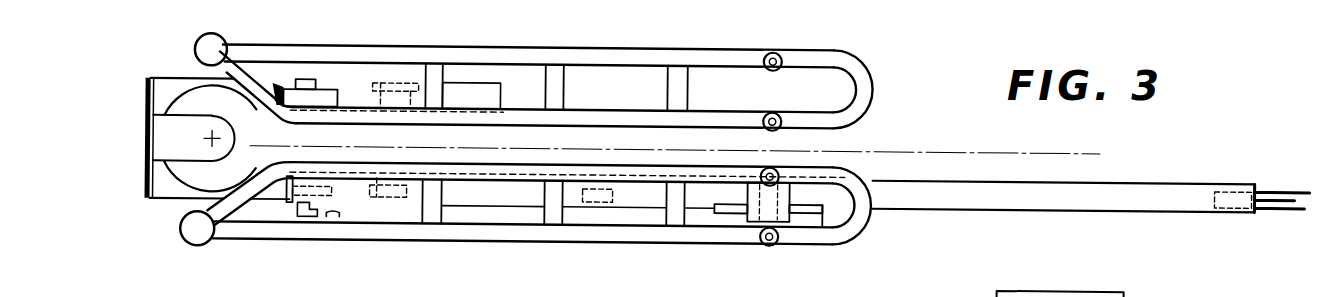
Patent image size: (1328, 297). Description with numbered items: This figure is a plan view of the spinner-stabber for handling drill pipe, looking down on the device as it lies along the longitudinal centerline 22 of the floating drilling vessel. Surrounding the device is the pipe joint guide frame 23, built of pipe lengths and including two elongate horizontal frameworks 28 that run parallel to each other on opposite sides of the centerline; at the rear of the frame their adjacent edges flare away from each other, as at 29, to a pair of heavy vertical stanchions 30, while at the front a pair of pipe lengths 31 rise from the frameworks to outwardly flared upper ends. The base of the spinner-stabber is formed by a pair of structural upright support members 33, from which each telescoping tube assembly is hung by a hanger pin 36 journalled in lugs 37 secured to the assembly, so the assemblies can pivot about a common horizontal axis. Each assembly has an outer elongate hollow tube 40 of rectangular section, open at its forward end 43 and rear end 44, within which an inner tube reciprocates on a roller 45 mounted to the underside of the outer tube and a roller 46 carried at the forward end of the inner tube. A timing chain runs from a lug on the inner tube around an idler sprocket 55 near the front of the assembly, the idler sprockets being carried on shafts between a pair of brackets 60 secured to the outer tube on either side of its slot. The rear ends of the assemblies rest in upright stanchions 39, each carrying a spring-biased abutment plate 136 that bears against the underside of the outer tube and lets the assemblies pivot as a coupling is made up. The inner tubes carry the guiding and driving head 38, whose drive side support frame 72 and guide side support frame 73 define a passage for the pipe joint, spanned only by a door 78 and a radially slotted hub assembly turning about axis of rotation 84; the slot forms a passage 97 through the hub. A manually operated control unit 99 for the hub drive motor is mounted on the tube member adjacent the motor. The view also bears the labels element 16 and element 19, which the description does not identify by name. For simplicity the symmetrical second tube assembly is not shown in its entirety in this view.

The carriage frame 16 is at (647, 145).
The arm junction 19 is at (272, 135).
The longitudinal centerline 22 is at (972, 148).
The pipe joint guide frame 23 is at (665, 48).
The elongate horizontal frameworks 28 is at (577, 53).
The flared edges 29 is at (241, 57).
The heavy vertical stanchions 30 is at (207, 42).
The pipe lengths 31 is at (771, 110).
The structural upright support members 33 is at (795, 214).
The hanger pin 36 is at (750, 218).
The lugs 37 is at (848, 170).
The guiding and driving head 38 is at (160, 87).
The upright stanchions 39 is at (333, 217).
The outer elongate hollow tube 40 is at (1150, 176).
The forward end 43 is at (1256, 214).
The rear end 44 is at (293, 203).
The roller 45 is at (427, 72).
The roller 46 is at (1207, 202).
The idler sprocket 55 is at (1297, 196).
The brackets 60 is at (1280, 184).
The drive side support frame 72 is at (178, 82).
The guide side support frame 73 is at (150, 202).
The door 78 is at (138, 153).
The axis of rotation 84 is at (216, 137).
The passage 97 is at (183, 146).
The manually operated control unit 99 is at (314, 89).
The abutment plate 136 is at (312, 218).